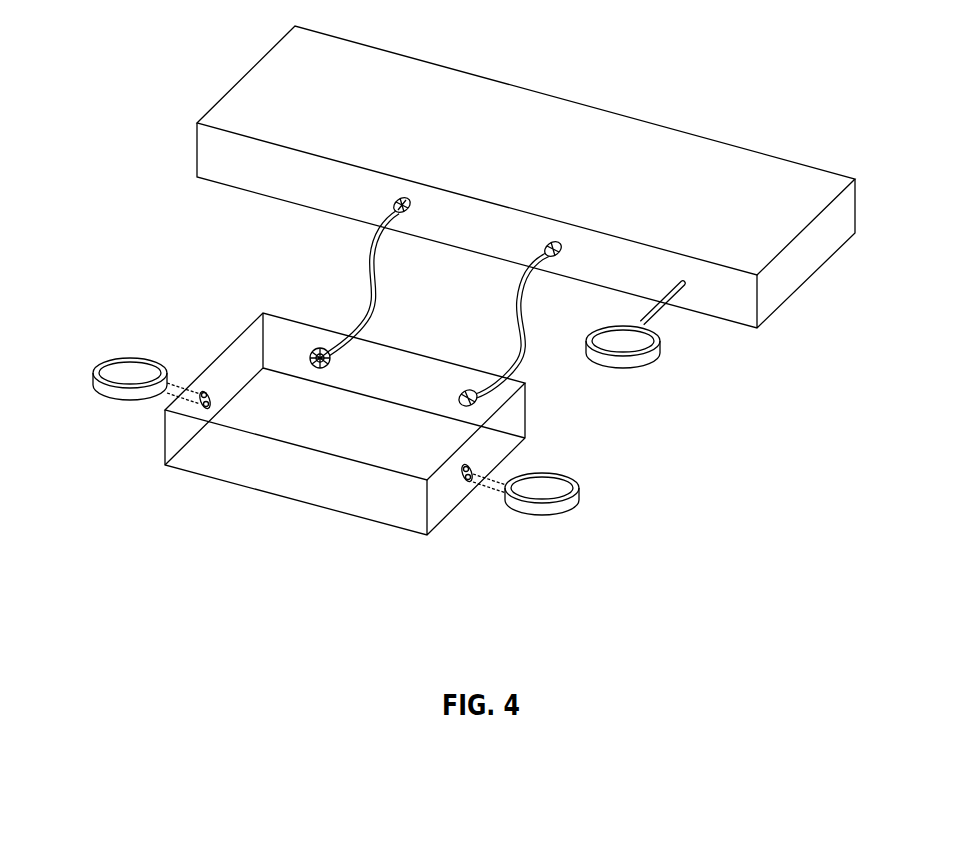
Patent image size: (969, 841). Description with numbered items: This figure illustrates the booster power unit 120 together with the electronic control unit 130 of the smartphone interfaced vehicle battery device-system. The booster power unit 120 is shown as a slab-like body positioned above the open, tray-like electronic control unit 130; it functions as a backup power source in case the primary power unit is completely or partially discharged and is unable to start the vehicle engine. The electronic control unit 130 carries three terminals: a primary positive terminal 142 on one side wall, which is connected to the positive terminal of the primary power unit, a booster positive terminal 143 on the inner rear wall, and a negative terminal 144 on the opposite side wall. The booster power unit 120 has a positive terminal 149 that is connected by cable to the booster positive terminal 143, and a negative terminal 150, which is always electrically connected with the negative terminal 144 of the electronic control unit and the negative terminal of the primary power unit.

The booster power unit 120 is at (502, 106).
The electronic control unit 130 is at (293, 478).
The primary positive terminal 142 is at (110, 357).
The booster positive terminal 143 is at (310, 350).
The negative terminal 144 is at (580, 487).
The positive terminal of booster power unit 149 is at (405, 213).
The negative terminal of booster power unit 150 is at (663, 318).